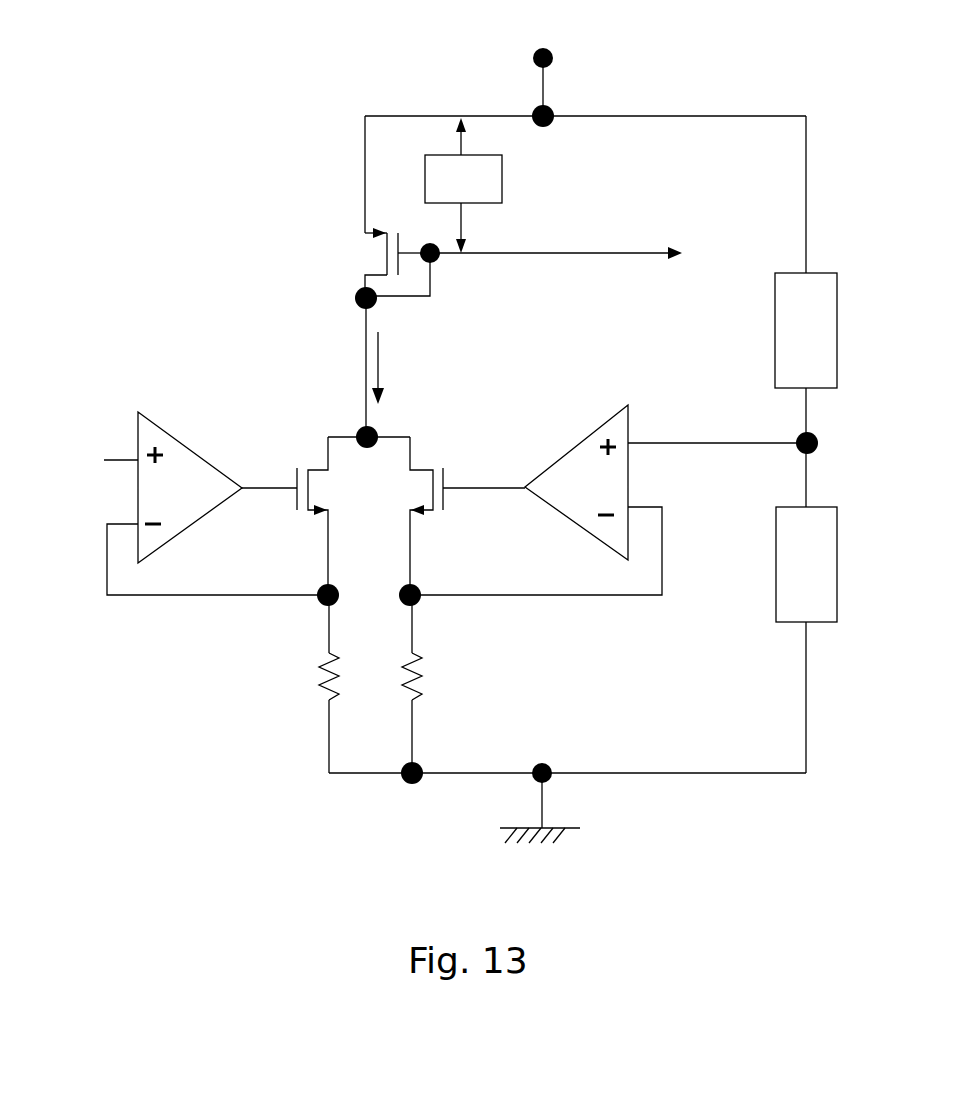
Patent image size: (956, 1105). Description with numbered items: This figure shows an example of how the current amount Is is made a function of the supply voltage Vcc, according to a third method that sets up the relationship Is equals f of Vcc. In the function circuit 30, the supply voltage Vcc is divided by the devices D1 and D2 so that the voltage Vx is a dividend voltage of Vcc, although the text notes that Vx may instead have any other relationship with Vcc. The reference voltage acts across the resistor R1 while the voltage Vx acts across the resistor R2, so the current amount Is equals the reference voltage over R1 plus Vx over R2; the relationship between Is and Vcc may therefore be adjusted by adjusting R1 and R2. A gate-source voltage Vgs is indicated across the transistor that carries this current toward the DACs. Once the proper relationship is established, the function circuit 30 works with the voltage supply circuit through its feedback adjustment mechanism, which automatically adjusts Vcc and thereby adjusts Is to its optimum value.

The function circuit 30 is at (759, 72).
The supply voltage Vcc is at (543, 71).
The gate-source voltage Vgs is at (463, 185).
The voltage Vx is at (744, 442).
The device D1 is at (806, 330).
The device D2 is at (806, 564).
The resistor R1 is at (303, 684).
The resistor R2 is at (438, 684).